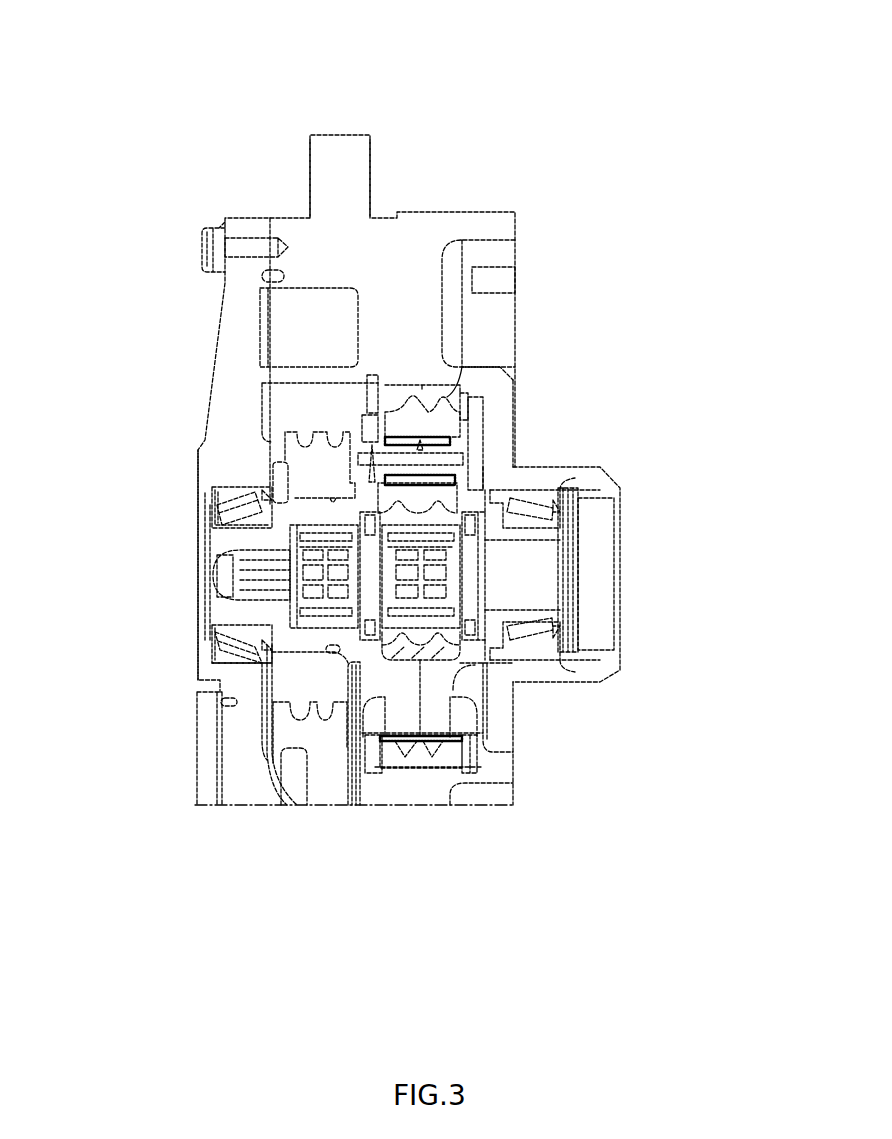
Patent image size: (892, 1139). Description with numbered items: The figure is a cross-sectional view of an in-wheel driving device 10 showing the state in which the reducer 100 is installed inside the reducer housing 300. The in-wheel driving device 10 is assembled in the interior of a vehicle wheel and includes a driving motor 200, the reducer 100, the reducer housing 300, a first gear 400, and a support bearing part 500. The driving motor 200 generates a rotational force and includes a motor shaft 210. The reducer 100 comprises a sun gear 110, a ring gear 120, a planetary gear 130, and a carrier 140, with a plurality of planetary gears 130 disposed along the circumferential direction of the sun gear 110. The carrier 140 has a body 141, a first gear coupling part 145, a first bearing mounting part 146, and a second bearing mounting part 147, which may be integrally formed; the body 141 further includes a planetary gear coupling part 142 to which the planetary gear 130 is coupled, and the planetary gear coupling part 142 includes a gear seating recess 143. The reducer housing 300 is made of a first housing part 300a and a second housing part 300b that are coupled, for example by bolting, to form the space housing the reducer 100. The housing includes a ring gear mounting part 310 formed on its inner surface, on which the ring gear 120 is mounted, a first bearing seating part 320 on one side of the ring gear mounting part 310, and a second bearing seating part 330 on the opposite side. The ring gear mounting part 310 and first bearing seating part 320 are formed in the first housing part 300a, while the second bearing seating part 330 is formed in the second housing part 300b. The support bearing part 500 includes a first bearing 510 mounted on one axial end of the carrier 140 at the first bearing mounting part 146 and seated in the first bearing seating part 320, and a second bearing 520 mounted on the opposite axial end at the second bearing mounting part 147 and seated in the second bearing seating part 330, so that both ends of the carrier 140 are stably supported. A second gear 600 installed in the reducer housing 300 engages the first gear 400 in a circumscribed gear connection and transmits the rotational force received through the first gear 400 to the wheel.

The in-wheel driving device 10 is at (192, 75).
The reducer 100 is at (624, 777).
The sun gear 110 is at (445, 637).
The ring gear 120 is at (460, 395).
The planetary gear 130 is at (392, 398).
The carrier 140 is at (380, 895).
The body 141 is at (402, 720).
The planetary gear coupling part 142 is at (140, 284).
The gear seating recess 143 is at (378, 402).
The first gear coupling part 145 is at (300, 642).
The first bearing mounting part 146 is at (540, 540).
The second bearing mounting part 147 is at (232, 613).
The driving motor 200 is at (697, 587).
The motor shaft 210 is at (560, 575).
The reducer housing 300 is at (355, 65).
The first housing part 300a is at (338, 222).
The second housing part 300b is at (232, 374).
The ring gear mounting part 310 is at (425, 393).
The first bearing seating part 320 is at (540, 488).
The second bearing seating part 330 is at (225, 495).
The first gear 400 is at (265, 695).
The support bearing part 500 is at (716, 465).
The first bearing 510 is at (600, 485).
The second bearing 520 is at (212, 496).
The second gear 600 is at (293, 735).